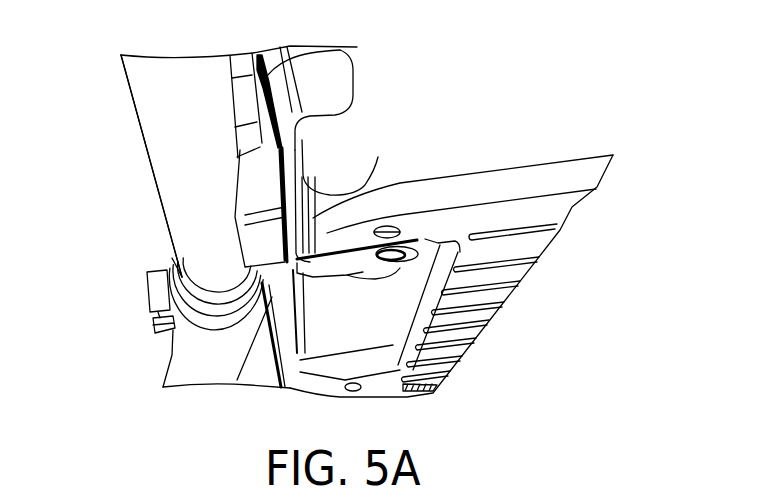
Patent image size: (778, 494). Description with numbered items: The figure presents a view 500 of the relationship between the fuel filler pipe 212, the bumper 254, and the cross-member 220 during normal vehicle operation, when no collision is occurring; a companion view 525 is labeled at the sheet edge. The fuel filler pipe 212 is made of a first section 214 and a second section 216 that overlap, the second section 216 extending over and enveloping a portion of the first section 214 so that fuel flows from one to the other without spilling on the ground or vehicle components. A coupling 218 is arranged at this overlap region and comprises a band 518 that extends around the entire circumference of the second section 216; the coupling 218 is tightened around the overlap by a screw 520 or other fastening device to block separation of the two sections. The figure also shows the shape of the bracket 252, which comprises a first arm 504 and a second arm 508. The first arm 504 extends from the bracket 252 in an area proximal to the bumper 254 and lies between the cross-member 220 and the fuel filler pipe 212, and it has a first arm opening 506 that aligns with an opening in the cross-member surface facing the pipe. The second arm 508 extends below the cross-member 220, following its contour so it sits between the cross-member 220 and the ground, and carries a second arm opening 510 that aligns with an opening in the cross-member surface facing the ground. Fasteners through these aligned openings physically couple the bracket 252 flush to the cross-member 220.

The view 500 is at (616, 68).
The fuel filler pipe 212 is at (157, 191).
The first section 214 is at (140, 122).
The second section 216 is at (163, 387).
The coupling 218 is at (172, 258).
The cross-member 220 is at (362, 341).
The bracket 252 is at (315, 240).
The bumper 254 is at (275, 208).
The first arm 504 is at (262, 56).
The first arm opening 506 is at (340, 50).
The second arm 508 is at (405, 246).
The second arm opening 510 is at (389, 226).
The band 518 is at (223, 332).
The screw 520 is at (157, 333).
The view 525 is at (673, 493).